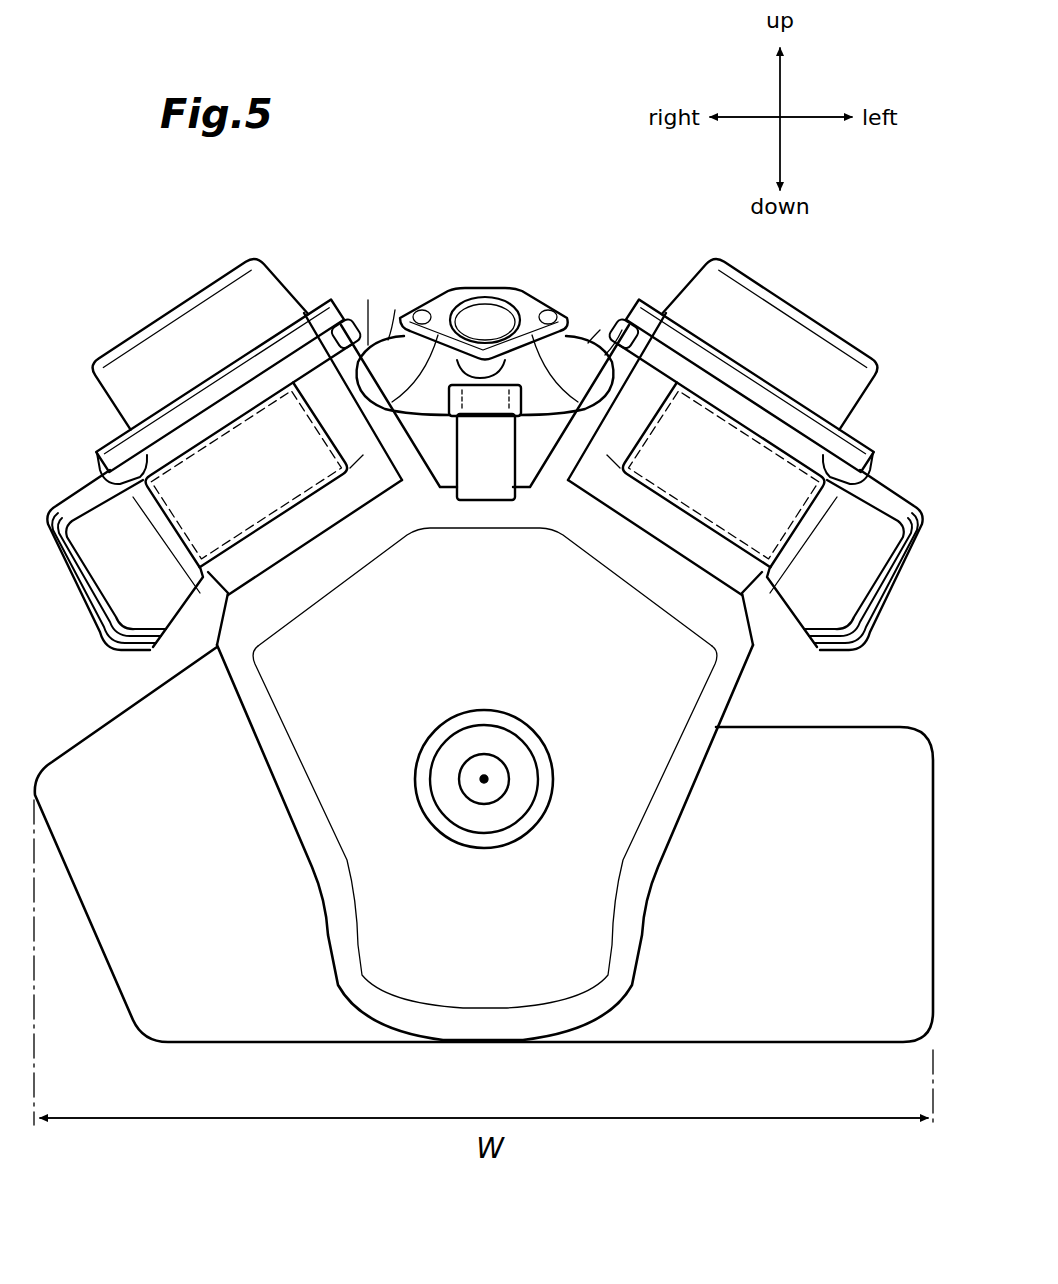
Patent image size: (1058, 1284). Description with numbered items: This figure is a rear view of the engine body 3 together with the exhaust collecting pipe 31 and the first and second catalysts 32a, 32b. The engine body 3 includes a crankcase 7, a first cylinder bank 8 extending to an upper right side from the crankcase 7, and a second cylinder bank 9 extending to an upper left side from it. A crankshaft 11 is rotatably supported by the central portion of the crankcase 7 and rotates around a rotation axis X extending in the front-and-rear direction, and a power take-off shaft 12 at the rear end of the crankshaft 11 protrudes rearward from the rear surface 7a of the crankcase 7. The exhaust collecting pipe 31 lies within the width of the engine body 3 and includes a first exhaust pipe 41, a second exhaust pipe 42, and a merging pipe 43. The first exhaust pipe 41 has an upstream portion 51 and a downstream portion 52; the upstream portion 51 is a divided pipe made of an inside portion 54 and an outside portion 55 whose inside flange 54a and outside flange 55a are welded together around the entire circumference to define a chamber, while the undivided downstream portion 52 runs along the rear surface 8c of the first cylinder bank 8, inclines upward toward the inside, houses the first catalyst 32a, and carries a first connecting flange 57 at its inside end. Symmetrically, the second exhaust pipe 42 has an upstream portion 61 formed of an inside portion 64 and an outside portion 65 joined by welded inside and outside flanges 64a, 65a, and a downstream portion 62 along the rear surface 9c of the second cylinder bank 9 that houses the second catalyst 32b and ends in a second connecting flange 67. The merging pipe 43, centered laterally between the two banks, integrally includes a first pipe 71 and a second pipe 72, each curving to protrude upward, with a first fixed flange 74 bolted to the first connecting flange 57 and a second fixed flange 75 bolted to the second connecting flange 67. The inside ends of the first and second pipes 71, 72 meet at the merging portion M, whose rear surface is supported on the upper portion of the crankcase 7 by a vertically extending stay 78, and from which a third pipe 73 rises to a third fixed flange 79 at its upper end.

The engine body 3 is at (290, 1050).
The crankcase 7 is at (425, 953).
The rear surface of the crankcase 7a is at (593, 937).
The first cylinder bank 8 is at (234, 491).
The rear surface of the first cylinder bank 8c is at (255, 565).
The second cylinder bank 9 is at (727, 475).
The rear surface of the second cylinder bank 9c is at (718, 565).
The crankshaft 11 is at (475, 806).
The power take-off shaft 12 is at (462, 761).
The rotation axis X is at (486, 777).
The exhaust collecting pipe 31 is at (106, 587).
The first catalyst 32a is at (168, 470).
The second catalyst 32b is at (765, 450).
The first exhaust pipe 41 is at (158, 452).
The second exhaust pipe 42 is at (806, 458).
The merging pipe 43 is at (560, 302).
The upstream portion of the first exhaust pipe 51 is at (72, 478).
The downstream portion of the first exhaust pipe 52 is at (150, 432).
The inside portion 54 is at (163, 613).
The inside flange 54a is at (115, 641).
The outside portion 55 is at (48, 528).
The outside flange 55a is at (85, 613).
The first connecting flange 57 is at (368, 300).
The upstream portion of the second exhaust pipe 61 is at (855, 570).
The downstream portion of the second exhaust pipe 62 is at (795, 447).
The inside portion 64 is at (802, 603).
The inside flange 64a is at (847, 640).
The outside portion 65 is at (928, 543).
The outside flange 65a is at (872, 627).
The second connecting flange 67 is at (622, 330).
The first pipe 71 is at (395, 310).
The second pipe 72 is at (600, 330).
The third pipe 73 is at (458, 442).
The first fixed flange 74 is at (439, 300).
The second fixed flange 75 is at (536, 300).
The stay 78 is at (490, 490).
The third fixed flange 79 is at (468, 290).
The merging portion M is at (507, 392).